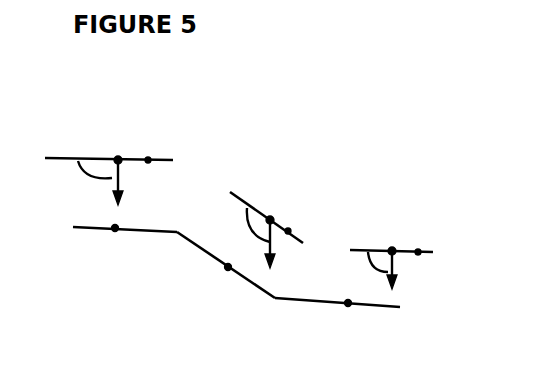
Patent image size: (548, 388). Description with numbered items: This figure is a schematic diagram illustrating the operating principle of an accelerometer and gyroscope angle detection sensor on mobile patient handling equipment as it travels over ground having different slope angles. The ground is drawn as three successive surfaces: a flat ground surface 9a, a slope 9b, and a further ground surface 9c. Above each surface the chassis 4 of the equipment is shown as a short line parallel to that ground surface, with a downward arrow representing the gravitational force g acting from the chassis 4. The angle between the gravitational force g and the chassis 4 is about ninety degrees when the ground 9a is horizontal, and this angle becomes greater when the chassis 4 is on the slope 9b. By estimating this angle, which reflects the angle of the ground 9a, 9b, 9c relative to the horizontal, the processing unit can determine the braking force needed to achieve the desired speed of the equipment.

The chassis 4 is at (148, 160).
The gravitational force g is at (263, 231).
The flat ground surface 9a is at (115, 230).
The slope 9b is at (227, 269).
The ground 9c is at (347, 305).